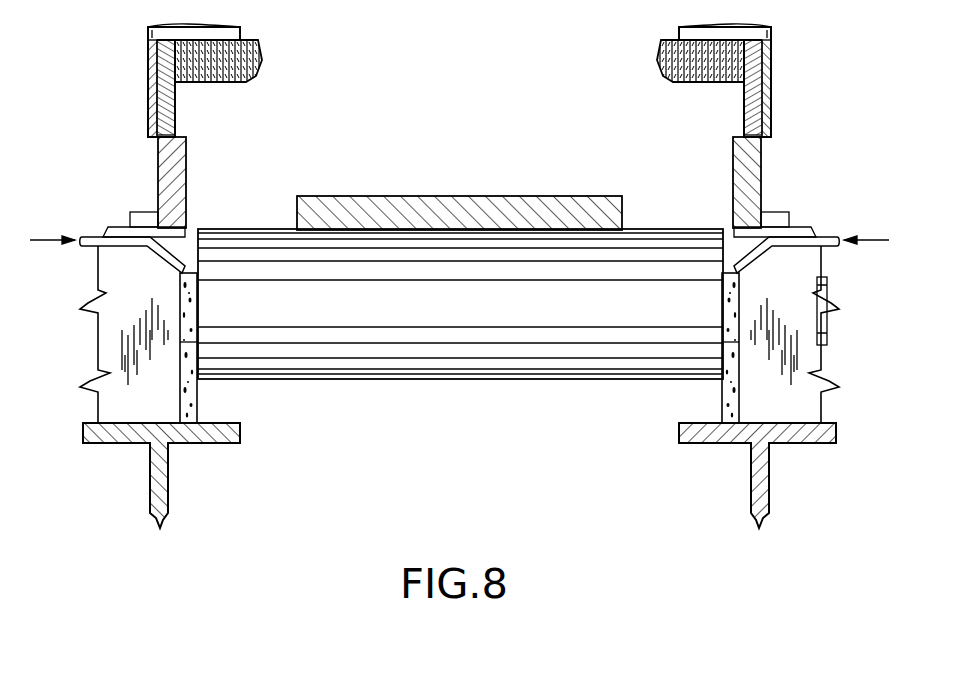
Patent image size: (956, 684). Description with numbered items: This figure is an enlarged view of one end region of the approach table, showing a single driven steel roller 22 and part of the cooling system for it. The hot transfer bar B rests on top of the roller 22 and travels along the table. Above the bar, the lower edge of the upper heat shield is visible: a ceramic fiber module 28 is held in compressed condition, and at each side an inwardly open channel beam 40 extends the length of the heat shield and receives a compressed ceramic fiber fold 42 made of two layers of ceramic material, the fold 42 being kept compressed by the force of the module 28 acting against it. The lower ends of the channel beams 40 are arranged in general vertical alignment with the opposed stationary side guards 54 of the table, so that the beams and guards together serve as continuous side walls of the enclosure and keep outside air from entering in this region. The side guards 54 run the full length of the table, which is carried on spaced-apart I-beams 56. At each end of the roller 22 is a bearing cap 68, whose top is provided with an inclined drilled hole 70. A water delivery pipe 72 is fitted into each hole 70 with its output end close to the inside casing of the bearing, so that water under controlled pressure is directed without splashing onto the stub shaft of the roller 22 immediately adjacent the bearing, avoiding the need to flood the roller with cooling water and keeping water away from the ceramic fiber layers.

The roller 22 is at (475, 381).
The transfer bar B is at (420, 196).
The module 28 is at (243, 78).
The channel beam 40 is at (148, 88).
The ceramic fiber fold 42 is at (177, 102).
The side guard 54 is at (186, 170).
The I-beam 56 is at (152, 450).
The bearing cap 68 is at (122, 252).
The inclined drilled hole 70 is at (163, 258).
The water delivery pipe 72 is at (88, 233).